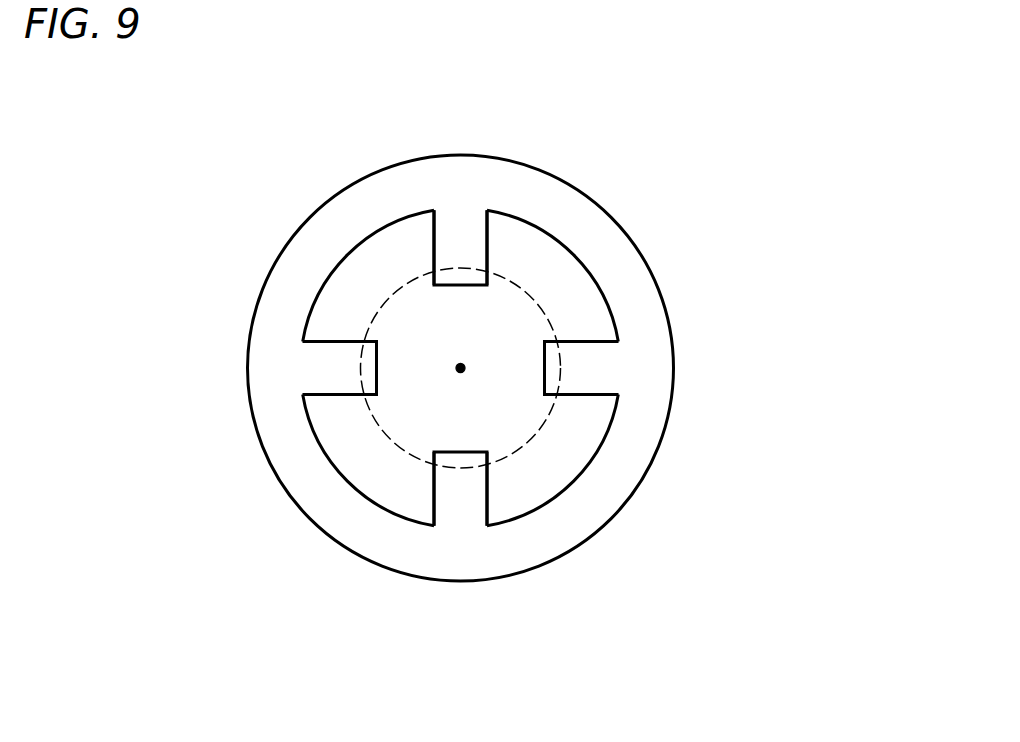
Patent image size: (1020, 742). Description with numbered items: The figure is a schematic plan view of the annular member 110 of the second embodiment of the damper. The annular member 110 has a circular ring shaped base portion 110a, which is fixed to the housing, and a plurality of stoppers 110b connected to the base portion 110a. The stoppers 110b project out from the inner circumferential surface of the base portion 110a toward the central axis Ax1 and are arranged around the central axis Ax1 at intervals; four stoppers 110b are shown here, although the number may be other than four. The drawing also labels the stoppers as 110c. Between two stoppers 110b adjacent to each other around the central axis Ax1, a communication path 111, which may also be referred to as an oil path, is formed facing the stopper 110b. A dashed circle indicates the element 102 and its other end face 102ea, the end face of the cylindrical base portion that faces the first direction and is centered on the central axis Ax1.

The annular member 110 is at (593, 196).
The base portion 110a is at (622, 270).
The stopper 110b is at (443, 256).
The side surface of groove 110c is at (467, 483).
The communication path 111 is at (515, 233).
The shaft 102 is at (634, 368).
The other end face 102ea is at (545, 313).
The central axis Ax1 is at (460, 368).